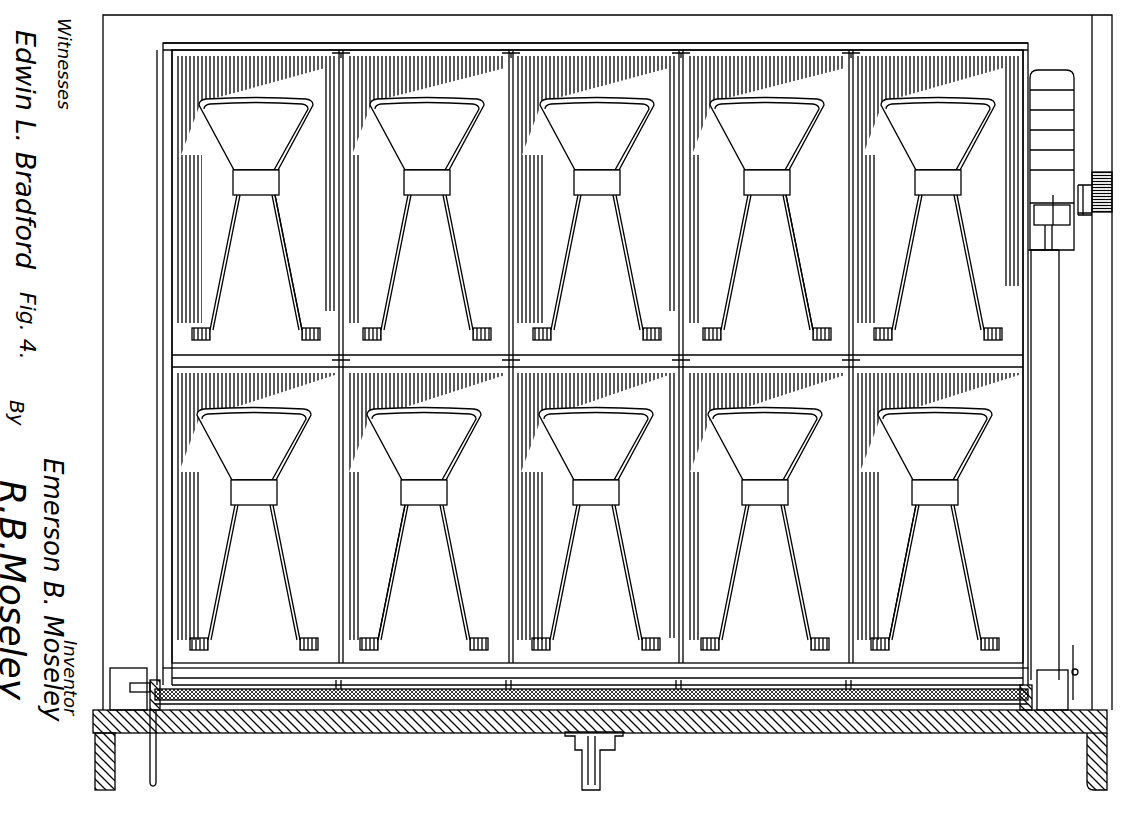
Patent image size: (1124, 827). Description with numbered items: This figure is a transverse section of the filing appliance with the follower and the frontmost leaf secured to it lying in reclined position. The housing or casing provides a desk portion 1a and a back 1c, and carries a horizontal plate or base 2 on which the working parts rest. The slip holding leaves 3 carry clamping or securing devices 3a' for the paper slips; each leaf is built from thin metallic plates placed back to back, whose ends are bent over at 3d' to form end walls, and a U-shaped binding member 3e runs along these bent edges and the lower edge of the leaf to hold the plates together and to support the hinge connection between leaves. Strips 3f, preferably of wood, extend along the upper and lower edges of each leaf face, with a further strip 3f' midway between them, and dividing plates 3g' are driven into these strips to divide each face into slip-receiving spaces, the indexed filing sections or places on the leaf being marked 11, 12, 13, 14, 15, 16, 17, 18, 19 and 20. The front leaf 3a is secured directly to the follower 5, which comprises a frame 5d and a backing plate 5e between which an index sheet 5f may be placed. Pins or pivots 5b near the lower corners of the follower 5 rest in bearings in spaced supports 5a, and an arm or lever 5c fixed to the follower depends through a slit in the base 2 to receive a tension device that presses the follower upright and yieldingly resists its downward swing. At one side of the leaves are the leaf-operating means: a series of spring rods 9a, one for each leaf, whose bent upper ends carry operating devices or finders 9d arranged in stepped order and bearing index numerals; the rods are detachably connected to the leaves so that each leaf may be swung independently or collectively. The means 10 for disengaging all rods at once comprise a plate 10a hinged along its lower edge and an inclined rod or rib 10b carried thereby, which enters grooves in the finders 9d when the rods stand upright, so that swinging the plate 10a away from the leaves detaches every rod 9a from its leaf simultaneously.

The desk portion 1a is at (1085, 762).
The back 1c is at (103, 355).
The horizontal plate or base 2 is at (492, 733).
The slip holding leaves 3 is at (580, 364).
The front leaf 3a is at (597, 716).
The clamping or securing devices 3a' is at (595, 417).
The bent over side edges 3d' is at (599, 348).
The binding member 3e is at (163, 470).
The strips 3f is at (595, 339).
The intermediate strip 3f' is at (597, 349).
The dividing plates 3g' is at (596, 368).
The follower 5 is at (388, 708).
The spaced supports 5a is at (118, 668).
The pins or pivots 5b is at (140, 683).
The arm or lever 5c is at (158, 775).
The follower frame 5d is at (990, 710).
The backing plate 5e is at (775, 688).
The index sheet 5f is at (832, 700).
The operating rods 9a is at (1031, 322).
The operating devices or finders 9d is at (1050, 70).
The rod disengaging means 10 is at (1095, 425).
The hinged plate 10a is at (1050, 337).
The rod or rib 10b is at (1052, 203).
The receptacle 11 is at (256, 219).
The receptacle 12 is at (427, 219).
The receptacle 13 is at (597, 219).
The receptacle 14 is at (767, 219).
The receptacle 15 is at (938, 219).
The receptacle 16 is at (254, 529).
The receptacle 17 is at (424, 529).
The receptacle 18 is at (596, 529).
The receptacle 19 is at (765, 529).
The receptacle 20 is at (935, 529).